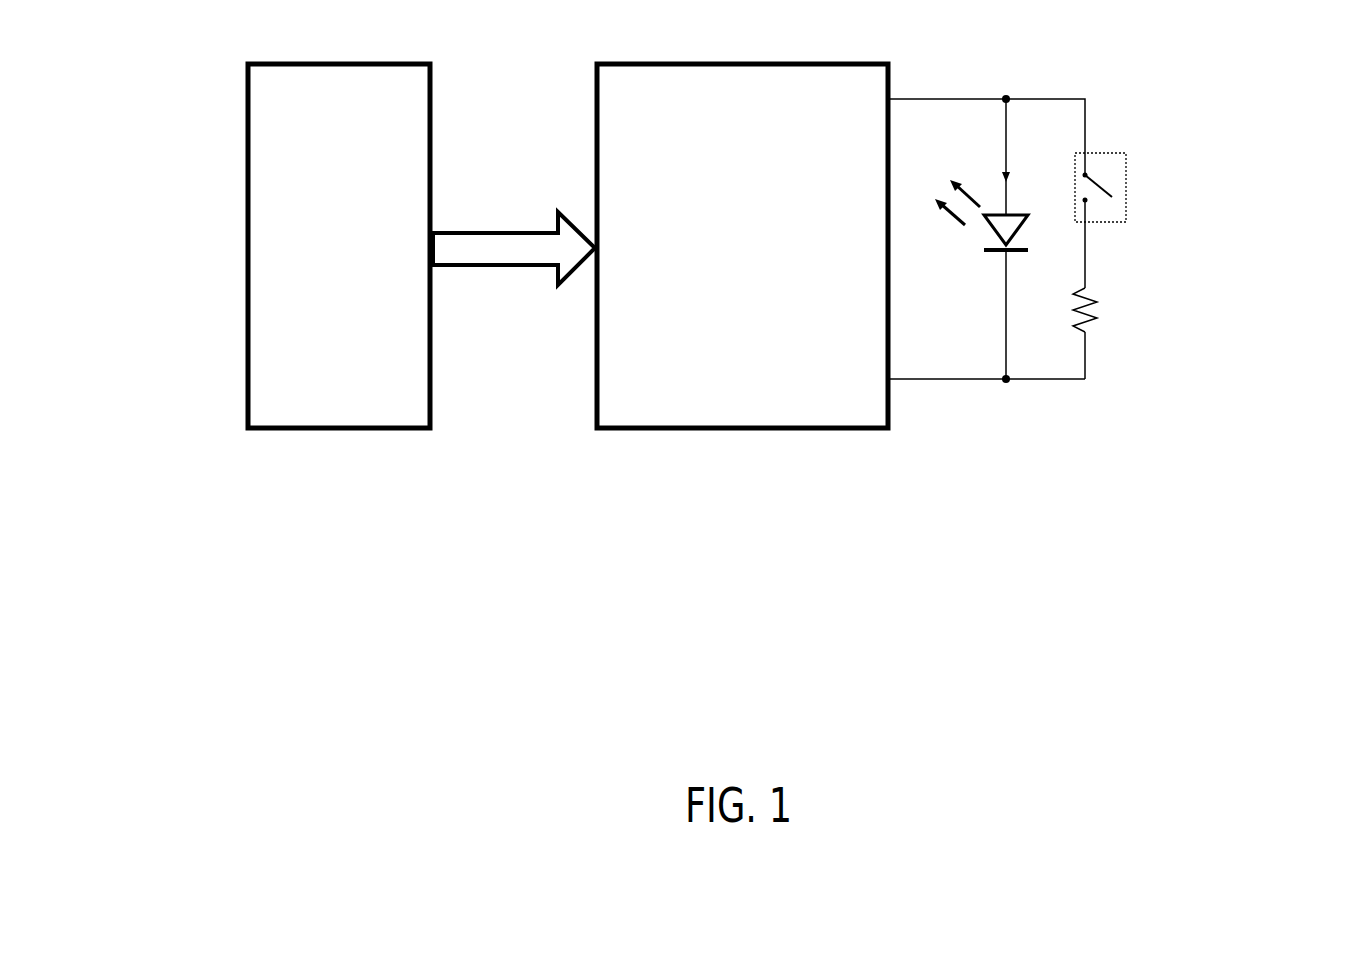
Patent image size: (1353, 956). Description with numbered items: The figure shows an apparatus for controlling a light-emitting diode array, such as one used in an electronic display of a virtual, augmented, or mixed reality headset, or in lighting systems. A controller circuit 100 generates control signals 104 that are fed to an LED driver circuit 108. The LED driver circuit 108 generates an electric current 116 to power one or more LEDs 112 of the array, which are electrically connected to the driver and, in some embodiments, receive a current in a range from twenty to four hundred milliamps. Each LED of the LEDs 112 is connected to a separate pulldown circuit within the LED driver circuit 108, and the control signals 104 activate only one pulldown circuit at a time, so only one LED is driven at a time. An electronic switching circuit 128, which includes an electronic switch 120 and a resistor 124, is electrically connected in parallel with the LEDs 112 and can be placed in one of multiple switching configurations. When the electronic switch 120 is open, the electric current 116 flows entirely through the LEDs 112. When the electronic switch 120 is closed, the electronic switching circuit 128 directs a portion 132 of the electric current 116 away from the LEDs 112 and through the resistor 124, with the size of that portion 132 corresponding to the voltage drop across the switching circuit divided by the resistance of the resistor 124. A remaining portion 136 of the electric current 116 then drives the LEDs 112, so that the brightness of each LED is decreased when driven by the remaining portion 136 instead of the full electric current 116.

The controller circuit 100 is at (358, 267).
The control signals 104 is at (537, 231).
The LED driver circuit 108 is at (767, 256).
The LEDs 112 is at (985, 253).
The electric current 116 is at (947, 100).
The electronic switch 120 is at (1124, 180).
The resistor 124 is at (1090, 300).
The electronic switching circuit 128 is at (1074, 214).
The portion of the electric current 132 is at (1040, 100).
The remaining portion of the electric current 136 is at (1010, 186).